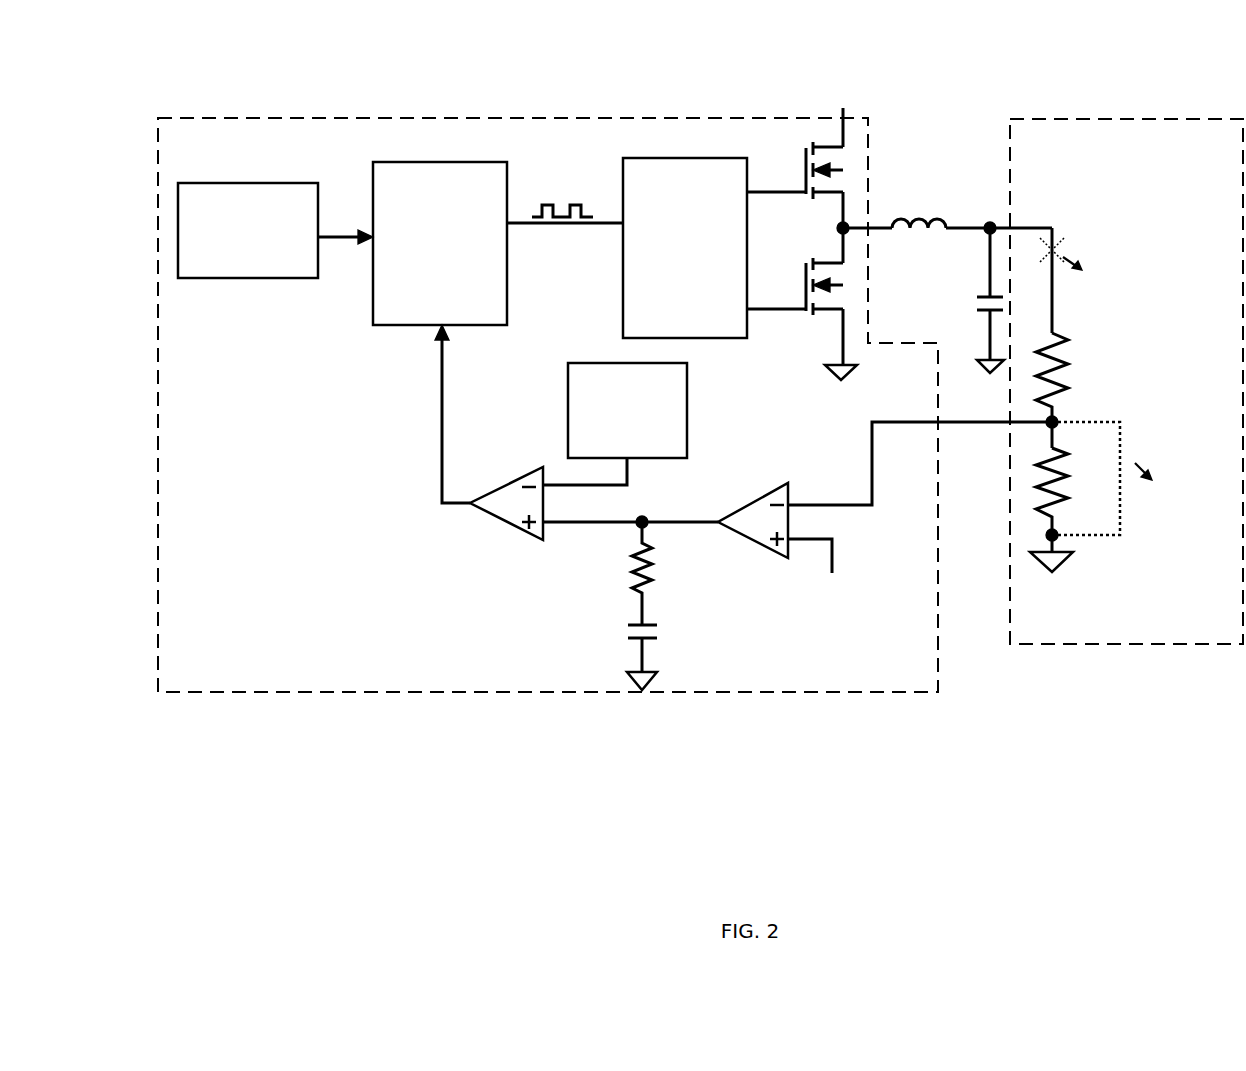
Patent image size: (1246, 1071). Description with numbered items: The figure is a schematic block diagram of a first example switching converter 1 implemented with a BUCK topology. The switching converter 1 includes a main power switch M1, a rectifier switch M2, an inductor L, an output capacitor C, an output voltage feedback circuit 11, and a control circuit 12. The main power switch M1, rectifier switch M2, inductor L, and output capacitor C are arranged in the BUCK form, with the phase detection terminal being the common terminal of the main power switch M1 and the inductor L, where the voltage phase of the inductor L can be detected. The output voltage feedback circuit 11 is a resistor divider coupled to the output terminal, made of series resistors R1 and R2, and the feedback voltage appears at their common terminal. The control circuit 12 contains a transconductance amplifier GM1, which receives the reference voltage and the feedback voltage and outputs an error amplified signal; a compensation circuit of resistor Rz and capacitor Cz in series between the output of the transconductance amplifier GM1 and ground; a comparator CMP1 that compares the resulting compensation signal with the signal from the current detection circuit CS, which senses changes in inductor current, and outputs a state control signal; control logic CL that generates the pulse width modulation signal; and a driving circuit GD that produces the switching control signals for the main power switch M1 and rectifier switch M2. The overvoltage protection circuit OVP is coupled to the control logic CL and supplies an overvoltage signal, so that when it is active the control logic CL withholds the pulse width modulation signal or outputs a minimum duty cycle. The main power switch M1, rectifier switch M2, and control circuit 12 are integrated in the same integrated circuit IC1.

The switching converter 1 is at (252, 55).
The output voltage feedback circuit 11 is at (1090, 105).
The control circuit 12 is at (368, 560).
The integrated circuit IC1 is at (212, 157).
The overvoltage protection circuit OVP is at (255, 278).
The control logic CL is at (402, 325).
The driving circuit GD is at (623, 288).
The current detection circuit CS is at (687, 417).
The comparator CMP1 is at (506, 515).
The transconductance amplifier GM1 is at (753, 531).
The main power switch M1 is at (802, 170).
The rectifier switch M2 is at (802, 286).
The inductor L is at (919, 208).
The output capacitor C is at (978, 300).
The resistor R1 is at (1068, 390).
The resistor R2 is at (1068, 500).
The resistor Rz is at (659, 573).
The capacitor Cz is at (655, 654).